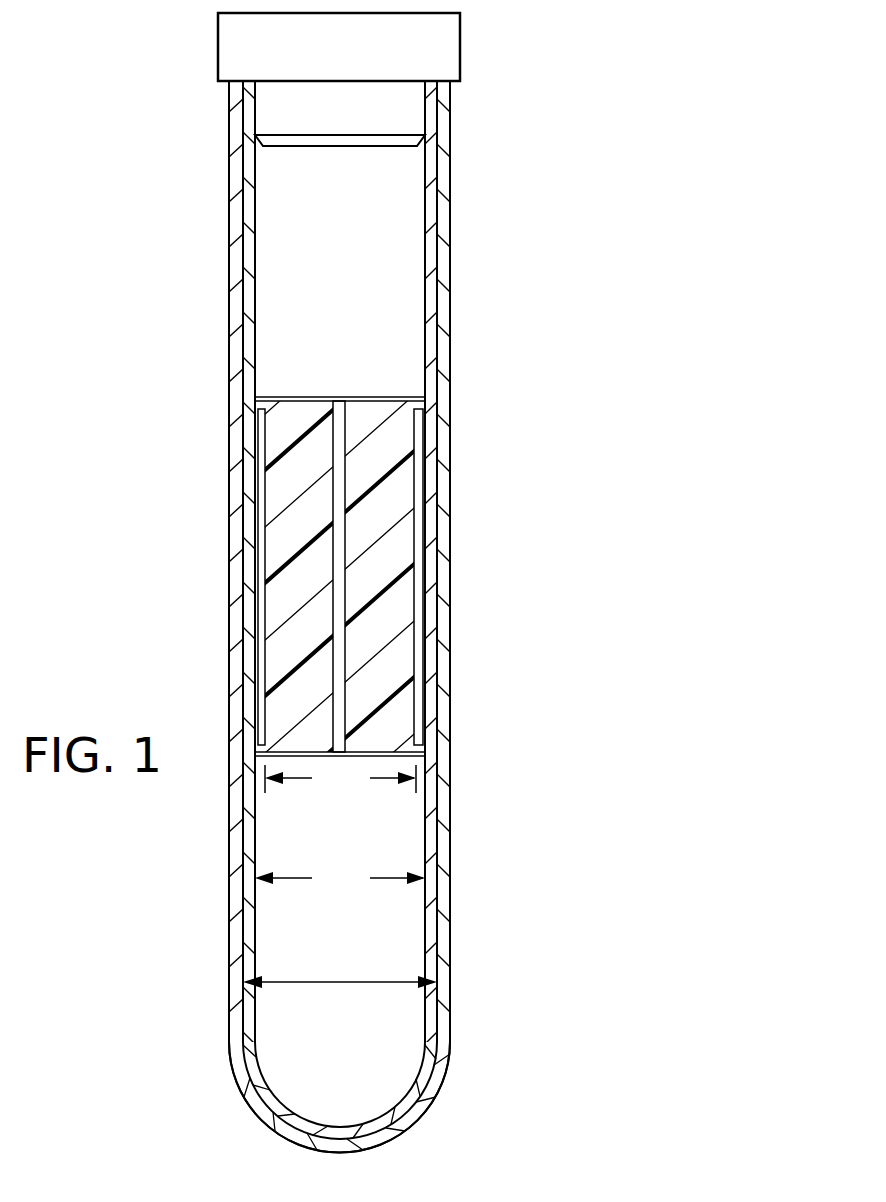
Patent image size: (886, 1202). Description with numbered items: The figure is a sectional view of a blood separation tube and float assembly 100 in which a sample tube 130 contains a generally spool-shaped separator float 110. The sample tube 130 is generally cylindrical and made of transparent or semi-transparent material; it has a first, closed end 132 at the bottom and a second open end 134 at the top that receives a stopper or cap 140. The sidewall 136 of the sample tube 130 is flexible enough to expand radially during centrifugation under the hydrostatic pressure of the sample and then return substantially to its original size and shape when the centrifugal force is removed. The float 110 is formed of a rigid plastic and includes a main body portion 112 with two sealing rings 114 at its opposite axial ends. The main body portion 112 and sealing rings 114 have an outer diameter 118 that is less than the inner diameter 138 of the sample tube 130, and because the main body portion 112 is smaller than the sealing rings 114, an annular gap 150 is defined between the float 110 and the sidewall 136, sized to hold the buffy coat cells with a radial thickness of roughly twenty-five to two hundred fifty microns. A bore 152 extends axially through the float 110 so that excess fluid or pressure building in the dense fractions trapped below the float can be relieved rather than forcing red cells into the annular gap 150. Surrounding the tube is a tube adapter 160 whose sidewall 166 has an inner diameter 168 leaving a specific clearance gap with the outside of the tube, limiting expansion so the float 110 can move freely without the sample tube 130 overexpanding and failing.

The blood separation tube and float assembly 100 is at (582, 149).
The separator float 110 is at (360, 392).
The main body portion 112 is at (400, 488).
The sealing rings 114 is at (262, 406).
The outer diameter 118 is at (306, 780).
The sample tube 130 is at (445, 291).
The closed end 132 is at (415, 1112).
The open end 134 is at (248, 162).
The sidewall 136 is at (430, 600).
The inner diameter 138 is at (318, 878).
The cap 140 is at (441, 52).
The annular gap 150 is at (262, 596).
The bore 152 is at (342, 398).
The tube adapter 160 is at (222, 880).
The sidewall 166 is at (237, 948).
The inner diameter 168 is at (306, 985).